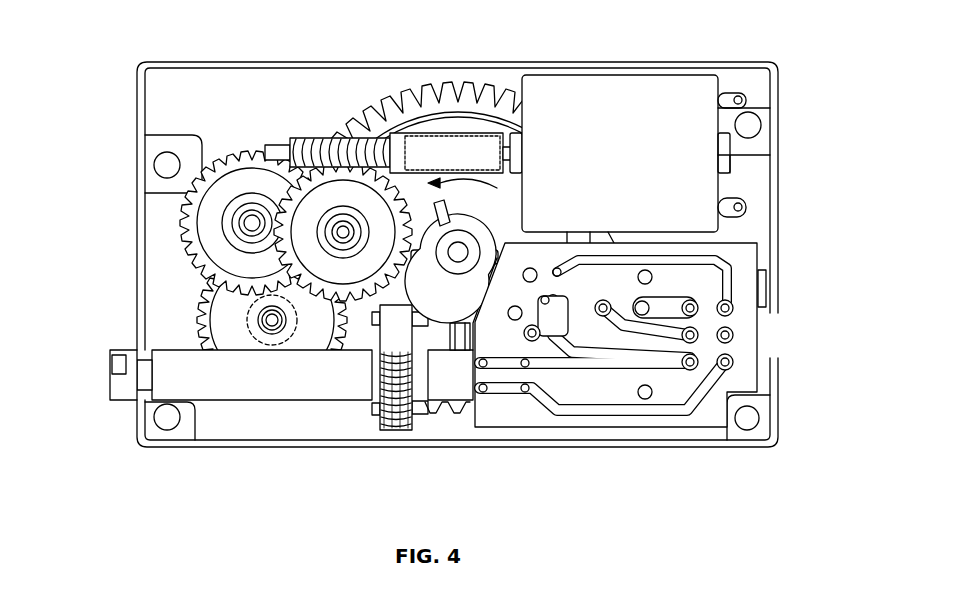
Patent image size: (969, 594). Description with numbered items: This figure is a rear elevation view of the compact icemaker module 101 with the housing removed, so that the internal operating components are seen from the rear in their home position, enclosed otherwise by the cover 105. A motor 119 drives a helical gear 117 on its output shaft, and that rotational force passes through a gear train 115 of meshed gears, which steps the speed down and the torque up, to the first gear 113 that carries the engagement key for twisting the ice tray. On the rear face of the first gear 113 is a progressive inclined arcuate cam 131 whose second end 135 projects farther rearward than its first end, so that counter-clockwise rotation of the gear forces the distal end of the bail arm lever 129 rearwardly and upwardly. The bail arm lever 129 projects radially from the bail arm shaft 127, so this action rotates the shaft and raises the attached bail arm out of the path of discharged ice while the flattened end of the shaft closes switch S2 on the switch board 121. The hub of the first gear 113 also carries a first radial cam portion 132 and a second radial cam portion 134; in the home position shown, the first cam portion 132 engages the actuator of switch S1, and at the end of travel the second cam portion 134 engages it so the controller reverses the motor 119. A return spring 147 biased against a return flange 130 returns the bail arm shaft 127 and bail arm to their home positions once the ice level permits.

The compact icemaker module 101 is at (120, 52).
The cover 105 is at (780, 195).
The first gear 113 is at (483, 83).
The gear train 115 is at (185, 242).
The helical gear 117 is at (318, 138).
The motor 119 is at (720, 87).
The switch board 121 is at (760, 337).
The bail arm shaft 127 is at (110, 388).
The bail arm lever 129 is at (243, 328).
The return flange 130 is at (417, 403).
The inclined arcuate cam 131 is at (437, 202).
The first radial cam portion 132 is at (497, 252).
The second radial cam portion 134 is at (437, 203).
The second end 135 is at (441, 202).
The return spring 147 is at (397, 428).